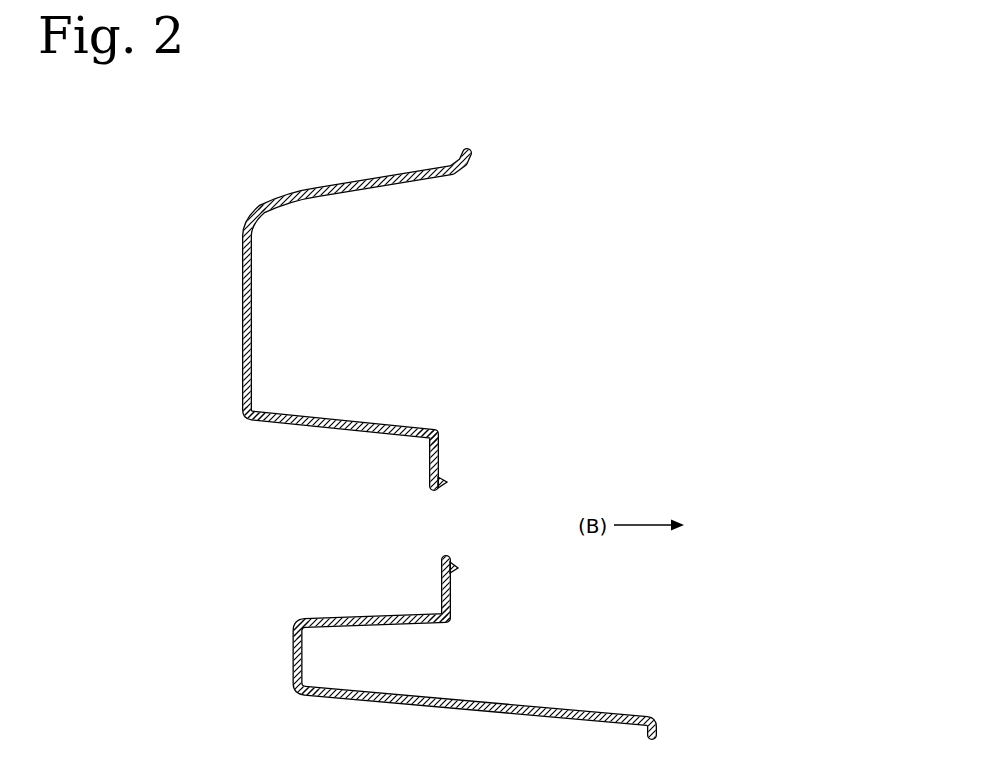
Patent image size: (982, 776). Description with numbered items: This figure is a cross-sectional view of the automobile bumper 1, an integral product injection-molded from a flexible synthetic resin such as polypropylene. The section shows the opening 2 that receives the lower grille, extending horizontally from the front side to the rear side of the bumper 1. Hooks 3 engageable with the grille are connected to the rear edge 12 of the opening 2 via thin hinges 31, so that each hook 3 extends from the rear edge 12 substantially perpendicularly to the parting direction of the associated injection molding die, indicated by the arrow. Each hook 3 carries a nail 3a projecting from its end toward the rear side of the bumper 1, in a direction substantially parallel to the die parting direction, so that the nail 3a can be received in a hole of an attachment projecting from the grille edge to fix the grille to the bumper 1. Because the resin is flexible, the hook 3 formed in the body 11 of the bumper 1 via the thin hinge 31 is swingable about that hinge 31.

The automobile bumper 1 is at (321, 157).
The opening 2 is at (295, 527).
The body 11 is at (245, 322).
The rear edge 12 is at (420, 430).
The hook 3 is at (440, 456).
The thin hinge 31 is at (434, 433).
The nail 3a is at (447, 491).